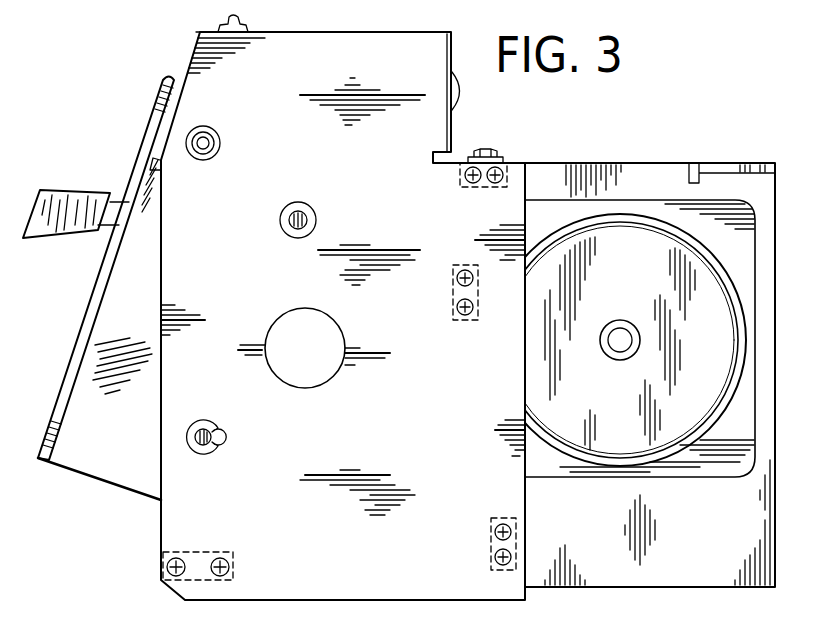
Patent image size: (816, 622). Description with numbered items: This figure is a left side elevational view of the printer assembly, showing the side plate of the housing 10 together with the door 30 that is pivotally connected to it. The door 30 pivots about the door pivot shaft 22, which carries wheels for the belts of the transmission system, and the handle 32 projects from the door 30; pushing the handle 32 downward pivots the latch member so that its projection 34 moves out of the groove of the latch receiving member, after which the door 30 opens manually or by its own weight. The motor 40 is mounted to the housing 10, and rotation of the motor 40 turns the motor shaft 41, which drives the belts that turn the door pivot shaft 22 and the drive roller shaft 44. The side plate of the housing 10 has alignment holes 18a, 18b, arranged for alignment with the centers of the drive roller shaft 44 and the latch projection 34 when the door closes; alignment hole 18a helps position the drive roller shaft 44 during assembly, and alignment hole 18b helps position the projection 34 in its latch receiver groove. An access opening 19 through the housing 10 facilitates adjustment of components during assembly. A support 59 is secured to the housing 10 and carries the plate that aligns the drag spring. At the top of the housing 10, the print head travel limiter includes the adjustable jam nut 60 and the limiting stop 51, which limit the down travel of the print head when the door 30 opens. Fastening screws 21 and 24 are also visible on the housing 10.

The housing 10 is at (718, 584).
The alignment hole 18a is at (214, 158).
The alignment hole 18b is at (290, 236).
The access opening 19 is at (336, 360).
The fastening screws 21 is at (210, 552).
The door pivot shaft 22 is at (221, 437).
The fastening screws 24 is at (466, 322).
The door 30 is at (98, 488).
The handle 32 is at (72, 222).
The projection 34 is at (307, 220).
The motor 40 is at (656, 470).
The motor shaft 41 is at (615, 331).
The drive roller shaft 44 is at (211, 128).
The limiting stop 51 is at (202, 25).
The support 59 is at (507, 164).
The adjustable jam nut 60 is at (241, 18).